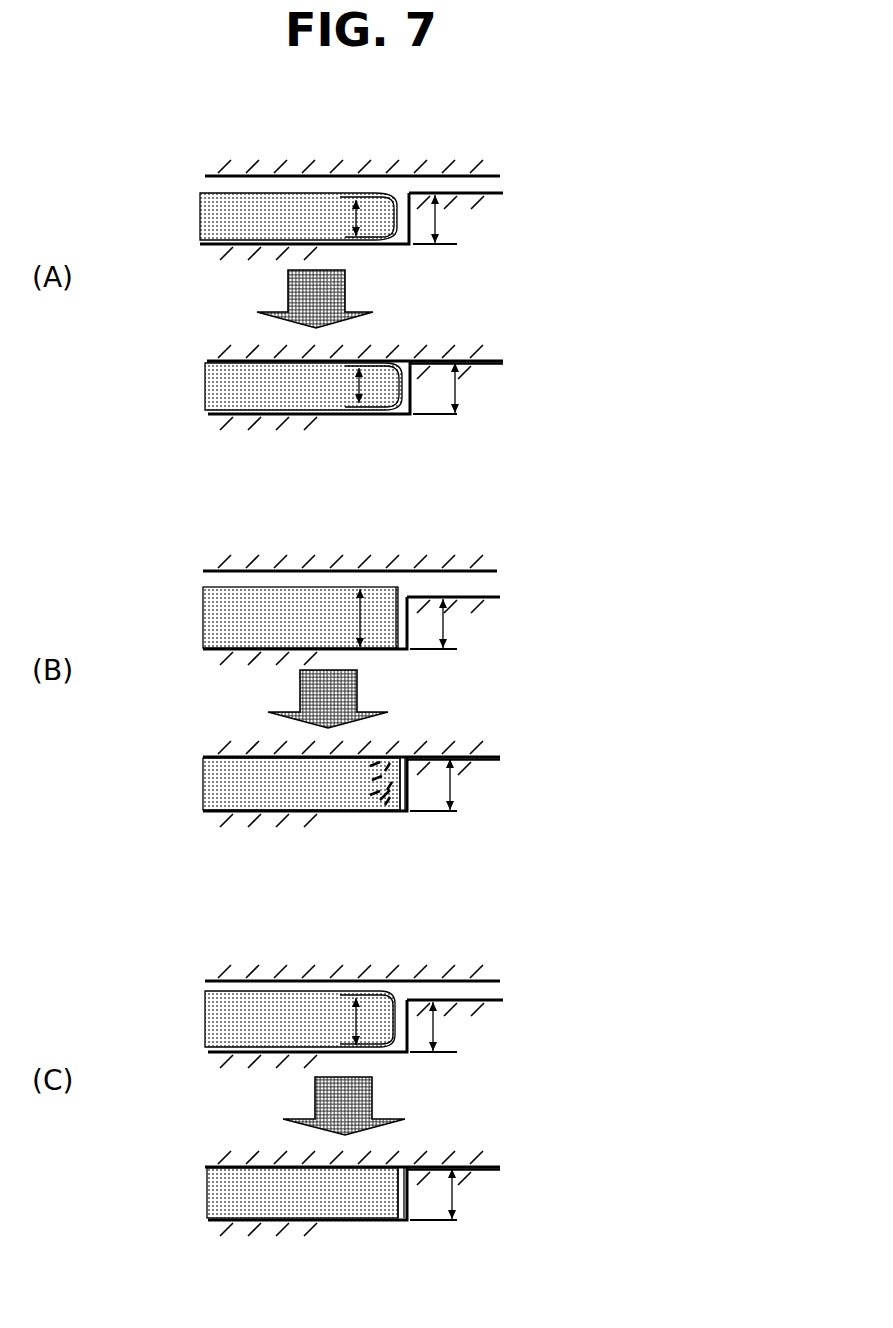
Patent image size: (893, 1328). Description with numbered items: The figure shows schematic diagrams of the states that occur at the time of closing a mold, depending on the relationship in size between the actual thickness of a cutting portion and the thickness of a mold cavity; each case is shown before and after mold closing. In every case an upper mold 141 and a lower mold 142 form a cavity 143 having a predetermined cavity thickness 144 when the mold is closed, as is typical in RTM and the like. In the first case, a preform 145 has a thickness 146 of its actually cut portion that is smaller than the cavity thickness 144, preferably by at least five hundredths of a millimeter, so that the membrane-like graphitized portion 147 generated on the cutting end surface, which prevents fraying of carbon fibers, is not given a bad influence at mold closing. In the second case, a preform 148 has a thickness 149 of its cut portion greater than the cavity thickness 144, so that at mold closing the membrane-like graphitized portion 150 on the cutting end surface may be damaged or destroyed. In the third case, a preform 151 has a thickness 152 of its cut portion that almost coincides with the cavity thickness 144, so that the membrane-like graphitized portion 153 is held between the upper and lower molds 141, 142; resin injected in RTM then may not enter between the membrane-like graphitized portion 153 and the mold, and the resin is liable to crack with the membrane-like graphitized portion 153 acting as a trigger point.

The upper mold 141 is at (467, 167).
The lower mold 142 is at (470, 203).
The cavity 143 is at (400, 238).
The cavity thickness 144 is at (440, 224).
The preform 145 is at (232, 200).
The thickness of cut portion 146 is at (335, 219).
The membrane-like graphitized portion 147 is at (397, 198).
The preform 148 is at (250, 600).
The thickness of cut portion 149 is at (360, 610).
The membrane-like graphitized portion 150 is at (397, 590).
The preform 151 is at (235, 1005).
The thickness of cut portion 152 is at (355, 1015).
The membrane-like graphitized portion 153 is at (391, 990).